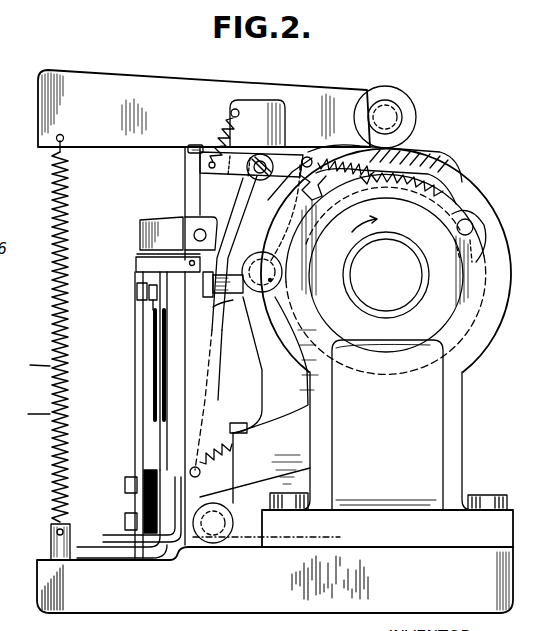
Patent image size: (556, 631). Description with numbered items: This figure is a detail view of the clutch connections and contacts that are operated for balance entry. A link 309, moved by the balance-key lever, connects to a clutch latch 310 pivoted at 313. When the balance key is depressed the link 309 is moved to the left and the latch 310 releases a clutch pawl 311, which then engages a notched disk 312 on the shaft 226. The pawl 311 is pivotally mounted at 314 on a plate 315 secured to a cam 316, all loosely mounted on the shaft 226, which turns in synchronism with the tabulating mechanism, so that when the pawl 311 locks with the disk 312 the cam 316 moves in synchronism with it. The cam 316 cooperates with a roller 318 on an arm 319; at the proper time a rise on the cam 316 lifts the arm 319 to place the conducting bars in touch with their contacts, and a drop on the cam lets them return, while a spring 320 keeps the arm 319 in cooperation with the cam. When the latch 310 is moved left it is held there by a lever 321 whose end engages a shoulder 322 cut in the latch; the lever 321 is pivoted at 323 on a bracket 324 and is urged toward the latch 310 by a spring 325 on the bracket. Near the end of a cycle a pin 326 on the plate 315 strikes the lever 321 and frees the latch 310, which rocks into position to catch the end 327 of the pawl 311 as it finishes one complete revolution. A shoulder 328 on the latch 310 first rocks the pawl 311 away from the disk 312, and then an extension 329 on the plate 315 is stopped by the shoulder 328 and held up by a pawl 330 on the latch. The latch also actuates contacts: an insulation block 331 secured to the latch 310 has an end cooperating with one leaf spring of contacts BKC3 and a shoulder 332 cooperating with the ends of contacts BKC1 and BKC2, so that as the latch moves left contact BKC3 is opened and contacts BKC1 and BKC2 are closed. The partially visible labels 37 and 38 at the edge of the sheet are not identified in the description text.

The shaft 226 is at (404, 286).
The link 309 is at (143, 219).
The clutch latch 310 is at (192, 430).
The clutch pawl 311 is at (284, 193).
The notched disk 312 is at (450, 175).
The pivot 313 is at (192, 545).
The pivot 314 is at (266, 292).
The plate 315 is at (468, 348).
The cam 316 is at (464, 388).
The roller 318 is at (403, 90).
The arm 319 is at (135, 88).
The spring 320 is at (53, 310).
The lever 321 is at (292, 150).
The shoulder 322 is at (187, 152).
The pivot 323 is at (251, 173).
The bracket 324 is at (264, 100).
The spring 325 is at (221, 130).
The pin 326 is at (485, 208).
The end 327 is at (282, 352).
The shoulder 328 is at (200, 194).
The extension 329 is at (233, 300).
The pawl 330 is at (218, 306).
The insulation block 331 is at (147, 258).
The shoulder 332 is at (210, 290).
The spring support 37 is at (26, 367).
The spring support 38 is at (26, 416).
The contacts BKC3 is at (143, 290).
The contact BKC1 is at (143, 300).
The contact BKC2 is at (150, 307).